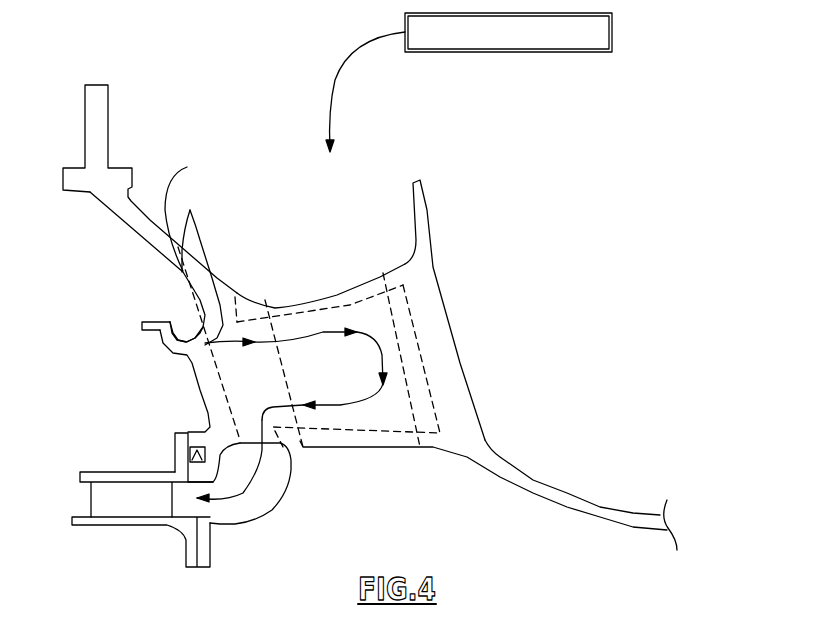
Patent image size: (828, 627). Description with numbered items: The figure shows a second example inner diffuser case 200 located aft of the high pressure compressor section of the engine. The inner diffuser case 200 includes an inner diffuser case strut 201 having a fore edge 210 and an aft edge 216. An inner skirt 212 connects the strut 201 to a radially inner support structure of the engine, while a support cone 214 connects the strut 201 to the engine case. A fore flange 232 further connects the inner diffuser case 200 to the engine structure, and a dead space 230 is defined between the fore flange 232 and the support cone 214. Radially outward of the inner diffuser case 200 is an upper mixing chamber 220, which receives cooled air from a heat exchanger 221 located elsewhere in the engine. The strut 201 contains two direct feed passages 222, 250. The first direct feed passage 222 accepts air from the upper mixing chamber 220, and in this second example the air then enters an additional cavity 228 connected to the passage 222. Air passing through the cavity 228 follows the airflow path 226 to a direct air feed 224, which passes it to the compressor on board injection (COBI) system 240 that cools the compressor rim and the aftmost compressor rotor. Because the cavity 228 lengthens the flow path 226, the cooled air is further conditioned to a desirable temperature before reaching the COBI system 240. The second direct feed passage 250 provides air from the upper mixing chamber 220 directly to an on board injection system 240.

The inner diffuser case 200 is at (590, 180).
The inner diffuser case strut 201 is at (337, 290).
The fore edge 210 is at (200, 397).
The inner skirt 212 is at (582, 498).
The support cone 214 is at (140, 232).
The aft edge 216 is at (478, 382).
The upper mixing chamber 220 is at (323, 256).
The heat exchanger 221 is at (613, 30).
The first direct feed passage 222 is at (196, 212).
The direct air feed 224 is at (258, 500).
The airflow path 226 is at (223, 233).
The cavity 228 is at (390, 350).
The dead space 230 is at (183, 313).
The fore flange 232 is at (141, 328).
The compressor on board injection (COBI) system 240 is at (118, 527).
The second direct feed passage 250 is at (357, 290).